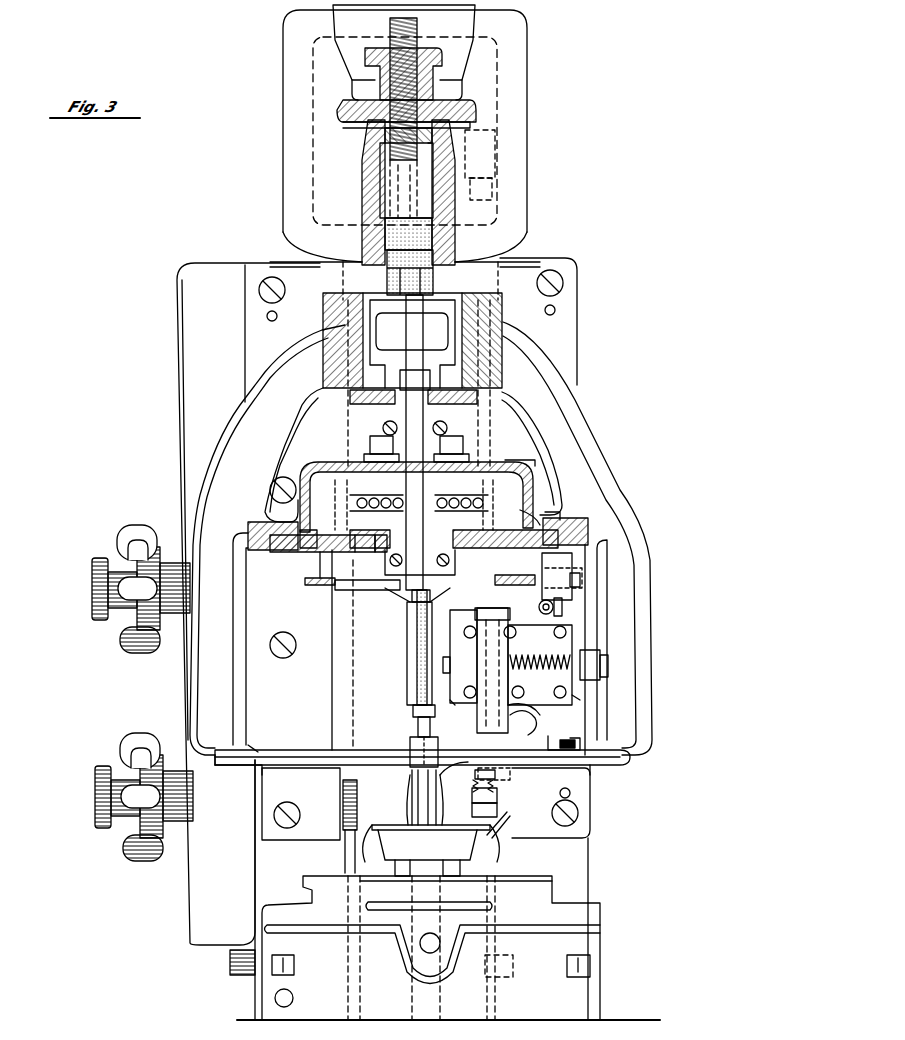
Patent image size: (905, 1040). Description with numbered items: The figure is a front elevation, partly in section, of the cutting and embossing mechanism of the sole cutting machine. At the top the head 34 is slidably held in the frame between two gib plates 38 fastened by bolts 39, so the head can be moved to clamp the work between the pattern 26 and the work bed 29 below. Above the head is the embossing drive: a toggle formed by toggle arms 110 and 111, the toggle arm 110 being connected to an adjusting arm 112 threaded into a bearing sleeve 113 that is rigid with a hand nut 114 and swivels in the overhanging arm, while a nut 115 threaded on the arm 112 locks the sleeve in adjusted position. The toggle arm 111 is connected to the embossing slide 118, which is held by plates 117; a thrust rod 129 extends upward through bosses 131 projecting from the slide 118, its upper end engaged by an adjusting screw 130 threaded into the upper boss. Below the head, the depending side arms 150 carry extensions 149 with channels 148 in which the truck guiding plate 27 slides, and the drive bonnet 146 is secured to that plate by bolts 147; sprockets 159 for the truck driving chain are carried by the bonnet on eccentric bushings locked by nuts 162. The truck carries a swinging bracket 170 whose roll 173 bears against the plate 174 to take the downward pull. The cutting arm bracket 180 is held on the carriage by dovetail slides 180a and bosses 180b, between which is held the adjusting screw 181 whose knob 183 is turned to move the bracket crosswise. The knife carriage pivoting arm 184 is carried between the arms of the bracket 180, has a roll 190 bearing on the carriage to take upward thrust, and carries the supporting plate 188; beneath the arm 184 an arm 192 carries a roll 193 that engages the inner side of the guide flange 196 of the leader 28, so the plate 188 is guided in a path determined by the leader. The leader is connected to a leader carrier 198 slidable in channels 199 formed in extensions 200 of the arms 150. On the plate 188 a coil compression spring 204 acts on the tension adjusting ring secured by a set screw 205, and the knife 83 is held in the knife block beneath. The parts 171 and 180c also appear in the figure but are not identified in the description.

The pattern 26 is at (420, 783).
The truck guiding plate 27 is at (565, 518).
The leader 28 is at (560, 770).
The work bed 29 is at (525, 885).
The head 34 is at (365, 300).
The gib plates 38 is at (246, 352).
The bolts 39 is at (272, 304).
The knife 83 is at (497, 832).
The toggle arm 110 is at (420, 312).
The toggle arm 111 is at (420, 368).
The adjusting arm 112 is at (400, 172).
The bearing sleeve 113 is at (440, 103).
The hand nut 114 is at (468, 113).
The nut 115 is at (440, 60).
The plates 117 is at (400, 592).
The slide 118 is at (440, 445).
The thrust rod 129 is at (425, 668).
The adjusting screw 130 is at (410, 612).
The bosses 131 is at (420, 630).
The drive bonnet 146 is at (536, 470).
The bolts 147 is at (520, 460).
The channels 148 is at (543, 530).
The extensions 149 is at (550, 512).
The depending side arms 150 is at (572, 400).
The sprockets 159 is at (419, 511).
The nuts 162 is at (378, 445).
The swinging bracket 170 is at (575, 580).
The pivot pin 171 is at (565, 612).
The anti-friction roll 173 is at (518, 588).
The plate 174 is at (312, 590).
The cutting arm bracket 180 is at (480, 615).
The dovetail slides 180a is at (505, 630).
The bosses 180b is at (580, 700).
The plunger guide 180c is at (458, 705).
The adjusting screw 181 is at (585, 650).
The knob 183 is at (598, 672).
The knife carriage pivoting arm 184 is at (510, 652).
The supporting plate 188 is at (513, 774).
The roll 190 is at (547, 707).
The arm 192 is at (538, 723).
The roll 193 is at (560, 740).
The guide flange 196 is at (385, 742).
The leader carrier 198 is at (245, 768).
The channels 199 is at (235, 748).
The extensions 200 is at (262, 745).
The coil compression spring 204 is at (457, 771).
The set screw 205 is at (500, 815).